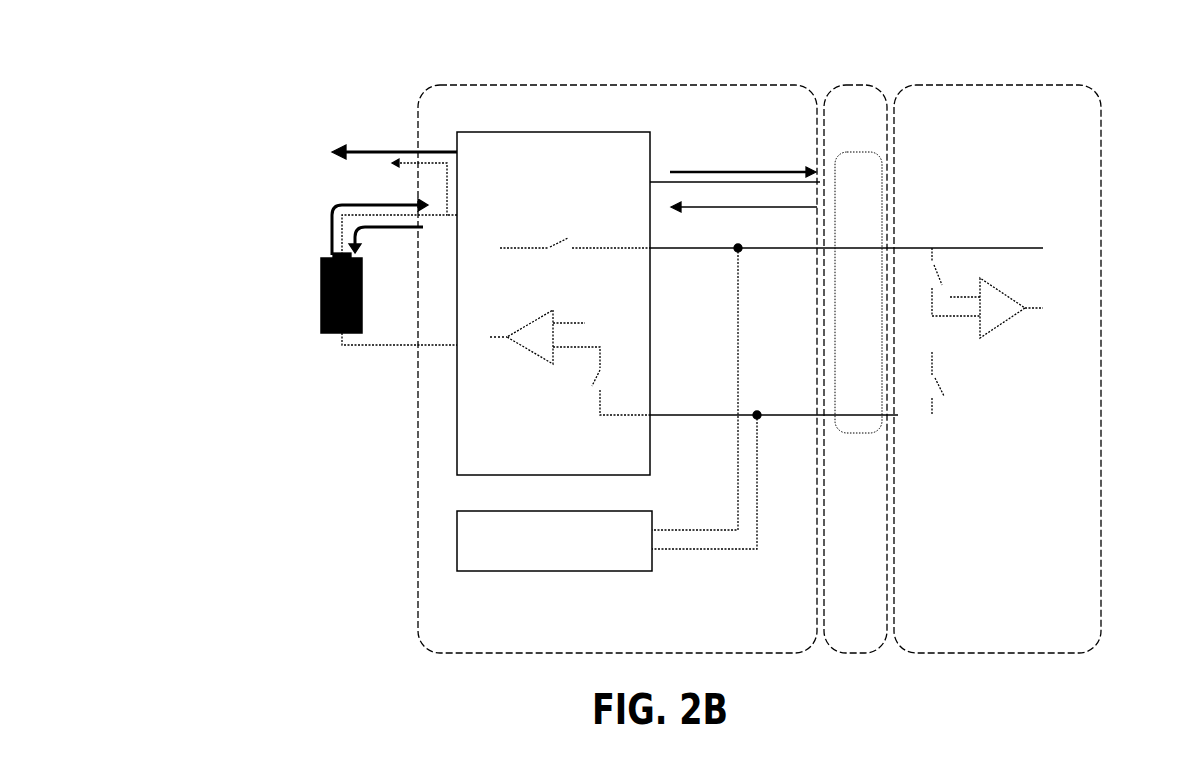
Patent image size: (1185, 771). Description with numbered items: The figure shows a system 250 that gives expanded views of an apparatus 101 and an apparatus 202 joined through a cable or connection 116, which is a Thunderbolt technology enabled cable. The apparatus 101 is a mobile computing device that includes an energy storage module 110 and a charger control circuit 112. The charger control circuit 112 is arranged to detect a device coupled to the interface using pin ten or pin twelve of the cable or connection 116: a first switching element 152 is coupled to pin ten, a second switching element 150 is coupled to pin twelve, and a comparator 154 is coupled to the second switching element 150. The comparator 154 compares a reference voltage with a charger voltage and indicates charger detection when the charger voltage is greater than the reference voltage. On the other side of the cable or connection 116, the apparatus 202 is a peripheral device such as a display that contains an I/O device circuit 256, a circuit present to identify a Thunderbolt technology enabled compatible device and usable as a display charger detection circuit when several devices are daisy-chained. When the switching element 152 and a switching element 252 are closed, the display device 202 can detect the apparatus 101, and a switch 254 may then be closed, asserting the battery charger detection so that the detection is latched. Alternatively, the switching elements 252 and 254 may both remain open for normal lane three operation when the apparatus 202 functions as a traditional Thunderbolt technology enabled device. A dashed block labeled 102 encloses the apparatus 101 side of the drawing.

The system 250 is at (663, 30).
The apparatus 101 is at (330, 147).
The electronic device 102 is at (475, 84).
The energy storage module 110 is at (318, 305).
The charger control circuit 112 is at (487, 440).
The cable or connection 116 is at (835, 93).
The second switching element 150 is at (588, 396).
The first switching element 152 is at (557, 228).
The comparator 154 is at (520, 350).
The apparatus 202 is at (952, 84).
The switching element 252 is at (925, 262).
The switch 254 is at (950, 400).
The I/O device circuit 256 is at (993, 363).